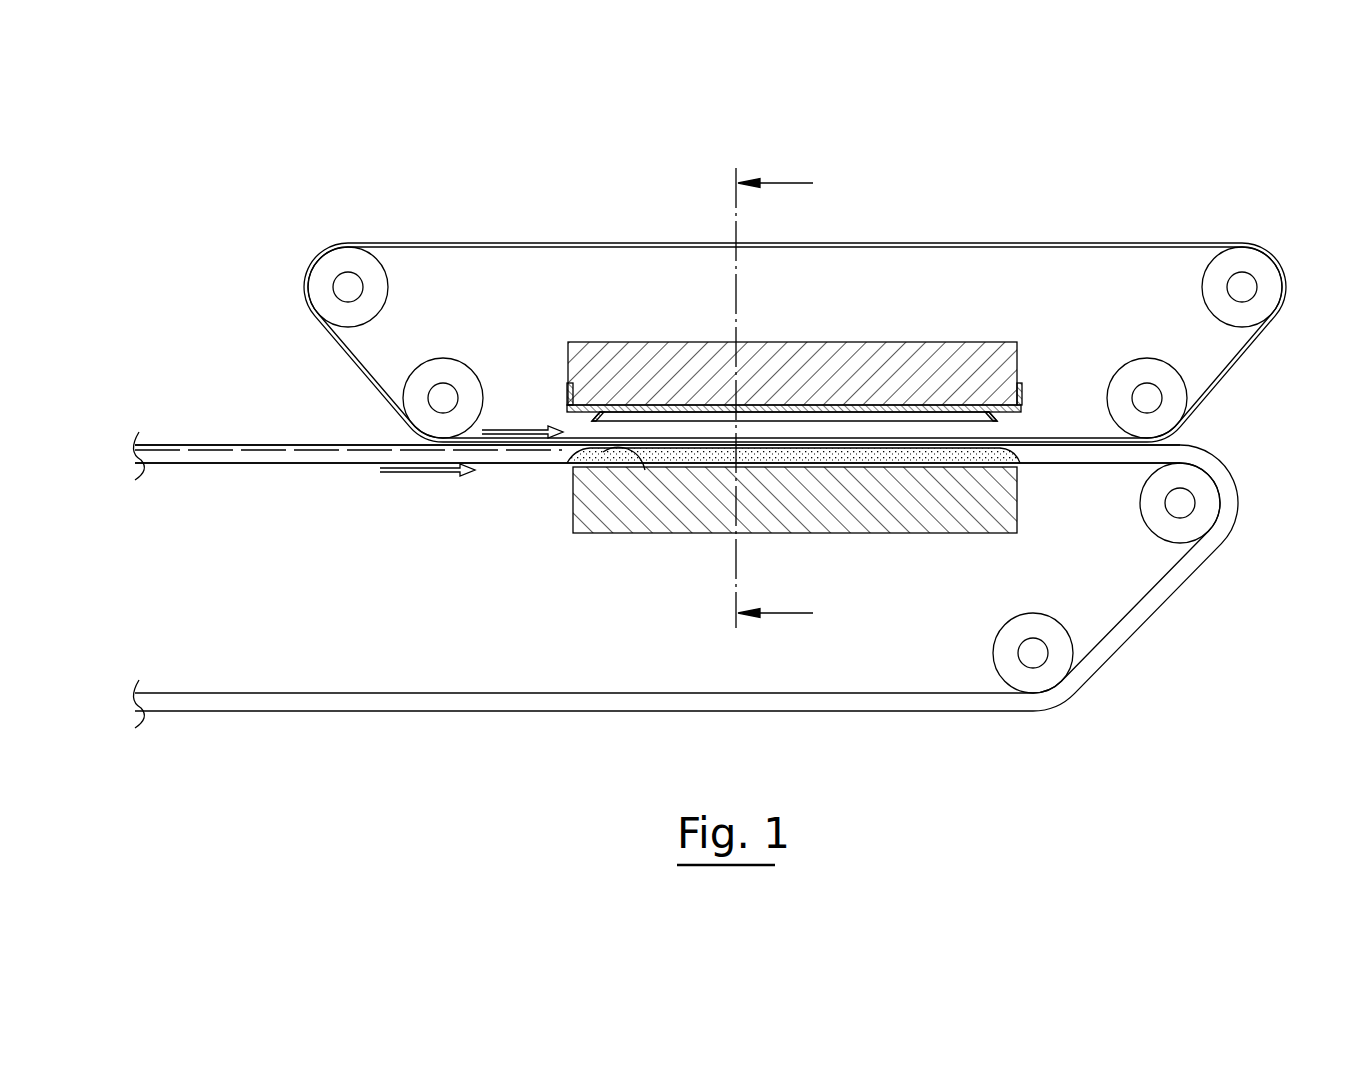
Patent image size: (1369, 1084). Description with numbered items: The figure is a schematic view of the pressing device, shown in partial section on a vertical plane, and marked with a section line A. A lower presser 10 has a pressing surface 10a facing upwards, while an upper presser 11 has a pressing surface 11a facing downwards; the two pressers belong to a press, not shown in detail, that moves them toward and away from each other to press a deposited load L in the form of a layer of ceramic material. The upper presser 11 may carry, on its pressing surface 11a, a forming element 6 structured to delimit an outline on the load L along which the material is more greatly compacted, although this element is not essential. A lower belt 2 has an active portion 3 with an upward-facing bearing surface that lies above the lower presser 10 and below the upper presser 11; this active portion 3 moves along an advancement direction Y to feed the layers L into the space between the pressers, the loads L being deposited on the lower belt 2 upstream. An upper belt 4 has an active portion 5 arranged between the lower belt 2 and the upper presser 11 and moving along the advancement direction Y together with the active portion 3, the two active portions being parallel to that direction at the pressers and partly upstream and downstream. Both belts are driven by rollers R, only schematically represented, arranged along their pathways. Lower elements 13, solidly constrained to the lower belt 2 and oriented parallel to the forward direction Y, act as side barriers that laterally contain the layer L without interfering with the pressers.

The rollers R is at (348, 256).
The upper belt 4 is at (850, 241).
The active portion of the upper belt 5 is at (513, 438).
The forming element 6 is at (592, 421).
The upper presser 11 is at (1022, 346).
The pressing surface of the upper presser 11a is at (943, 405).
The section line A- A is at (774, 392).
The lower belt 2 is at (1170, 603).
The active portion of the lower belt 3 is at (348, 463).
The lower elements 13 is at (187, 457).
The advancement direction Y is at (233, 450).
The lower presser 10 is at (1040, 518).
The pressing surface of the lower presser 10a is at (925, 468).
The load L is at (645, 470).